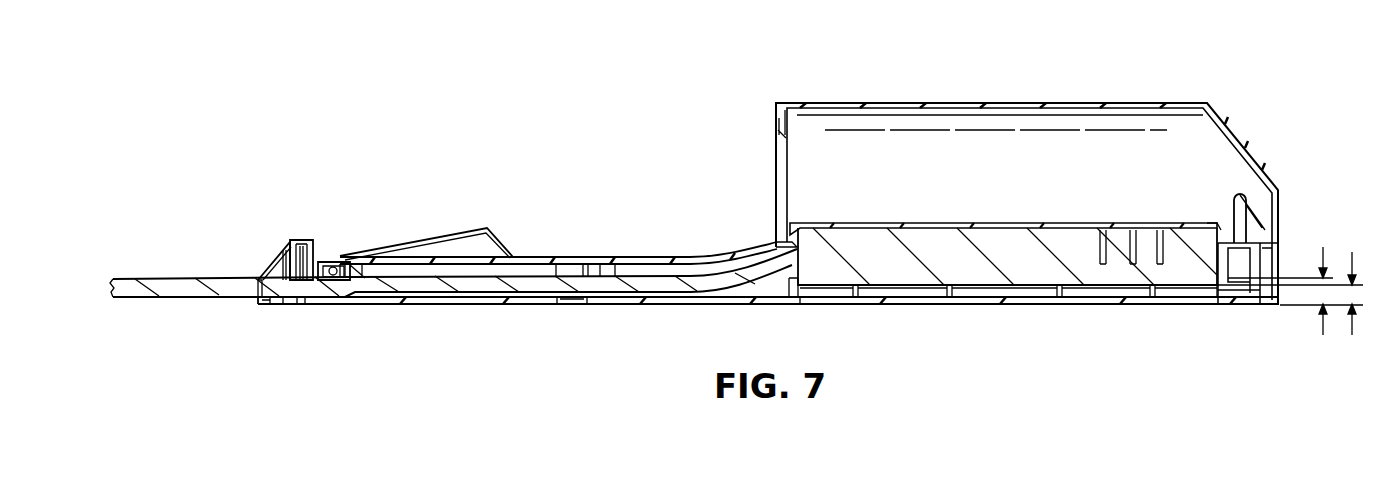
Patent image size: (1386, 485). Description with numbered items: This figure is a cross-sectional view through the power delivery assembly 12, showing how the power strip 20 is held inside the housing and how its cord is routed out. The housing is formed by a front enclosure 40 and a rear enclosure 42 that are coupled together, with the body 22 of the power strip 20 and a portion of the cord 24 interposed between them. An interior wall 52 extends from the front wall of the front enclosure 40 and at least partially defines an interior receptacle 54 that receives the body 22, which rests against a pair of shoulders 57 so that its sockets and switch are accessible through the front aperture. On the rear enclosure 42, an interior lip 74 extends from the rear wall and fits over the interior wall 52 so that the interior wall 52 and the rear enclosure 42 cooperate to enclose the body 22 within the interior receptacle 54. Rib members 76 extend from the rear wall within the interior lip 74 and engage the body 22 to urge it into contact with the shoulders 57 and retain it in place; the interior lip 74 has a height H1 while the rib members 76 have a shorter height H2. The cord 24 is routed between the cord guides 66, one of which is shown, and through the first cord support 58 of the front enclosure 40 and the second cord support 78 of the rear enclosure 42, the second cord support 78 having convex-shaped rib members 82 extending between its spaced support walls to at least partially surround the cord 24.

The power delivery assembly 12 is at (340, 120).
The power strip 20 is at (1073, 212).
The body 22 is at (993, 240).
The cord 24 is at (470, 287).
The front enclosure 40 is at (607, 242).
The rear enclosure 42 is at (613, 318).
The interior wall 52 is at (1209, 228).
The interior receptacle 54 is at (839, 297).
The shoulders 57 is at (815, 222).
The first cord support 58 is at (244, 264).
The cord guides 66 is at (565, 299).
The interior lip 74 is at (1210, 297).
The rib members 76 is at (276, 262).
The second cord support 78 is at (336, 317).
The rib members 82 is at (281, 306).
The height H1 is at (1283, 278).
The height H2 is at (1275, 310).